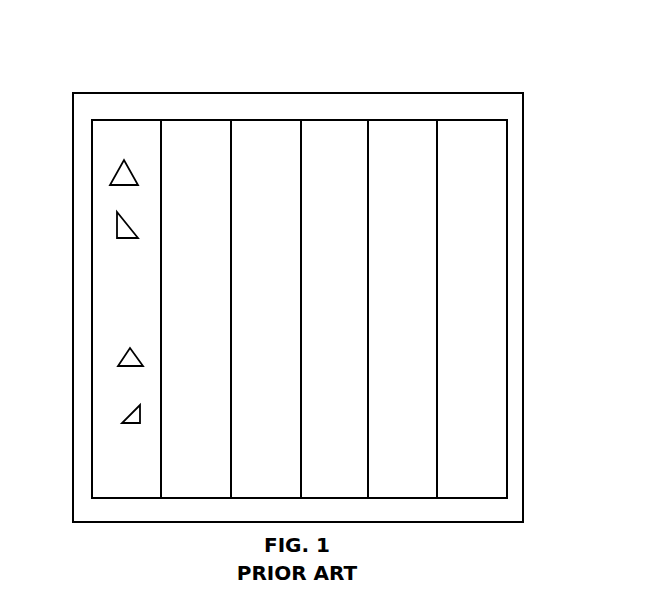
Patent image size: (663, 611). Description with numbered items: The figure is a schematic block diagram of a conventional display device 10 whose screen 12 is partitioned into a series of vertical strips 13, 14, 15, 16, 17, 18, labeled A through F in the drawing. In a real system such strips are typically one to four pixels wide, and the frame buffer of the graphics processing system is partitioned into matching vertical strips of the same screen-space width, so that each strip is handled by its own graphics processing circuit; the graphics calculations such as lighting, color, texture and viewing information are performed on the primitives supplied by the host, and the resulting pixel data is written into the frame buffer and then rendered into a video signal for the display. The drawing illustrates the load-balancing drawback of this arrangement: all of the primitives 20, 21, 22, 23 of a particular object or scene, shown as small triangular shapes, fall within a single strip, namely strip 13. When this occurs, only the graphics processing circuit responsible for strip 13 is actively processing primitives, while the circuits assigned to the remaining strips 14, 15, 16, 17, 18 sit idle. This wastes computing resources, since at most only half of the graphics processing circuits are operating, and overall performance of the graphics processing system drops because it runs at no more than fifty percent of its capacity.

The display device 10 is at (73, 275).
The screen 12 is at (393, 120).
The vertical strip 13 is at (135, 470).
The vertical strip 14 is at (208, 470).
The vertical strip 15 is at (275, 470).
The vertical strip 16 is at (343, 470).
The vertical strip 17 is at (408, 470).
The vertical strip 18 is at (483, 470).
The primitive 20 is at (134, 177).
The primitive 21 is at (130, 224).
The primitive 22 is at (127, 358).
The primitive 23 is at (134, 411).